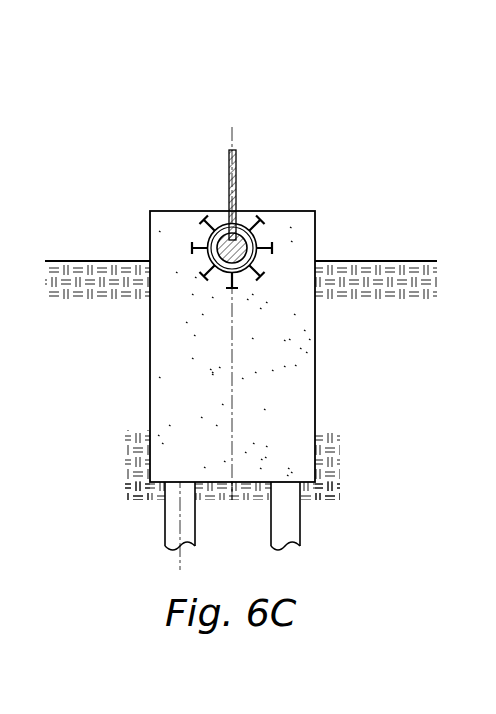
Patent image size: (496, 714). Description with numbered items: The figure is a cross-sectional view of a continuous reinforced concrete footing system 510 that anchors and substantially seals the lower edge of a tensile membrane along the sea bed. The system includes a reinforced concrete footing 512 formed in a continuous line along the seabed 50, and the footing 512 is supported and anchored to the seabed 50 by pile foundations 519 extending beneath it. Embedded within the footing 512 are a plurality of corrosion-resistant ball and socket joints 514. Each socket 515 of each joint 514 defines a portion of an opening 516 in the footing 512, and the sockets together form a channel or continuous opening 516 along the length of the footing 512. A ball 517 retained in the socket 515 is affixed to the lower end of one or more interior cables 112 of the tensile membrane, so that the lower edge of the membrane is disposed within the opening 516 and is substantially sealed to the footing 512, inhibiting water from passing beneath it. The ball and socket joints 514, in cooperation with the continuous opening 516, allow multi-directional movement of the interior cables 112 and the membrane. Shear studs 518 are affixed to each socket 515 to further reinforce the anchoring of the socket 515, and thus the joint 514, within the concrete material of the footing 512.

The continuous reinforced concrete footing system 510 is at (182, 151).
The interior cable 112 is at (237, 176).
The reinforced concrete footing 512 is at (150, 221).
The ball and socket joint 514 is at (269, 231).
The socket 515 is at (218, 222).
The opening 516 is at (243, 206).
The ball 517 is at (248, 244).
The shear stud 518 is at (190, 248).
The pile foundation 519 is at (165, 515).
The seabed 50 is at (371, 383).